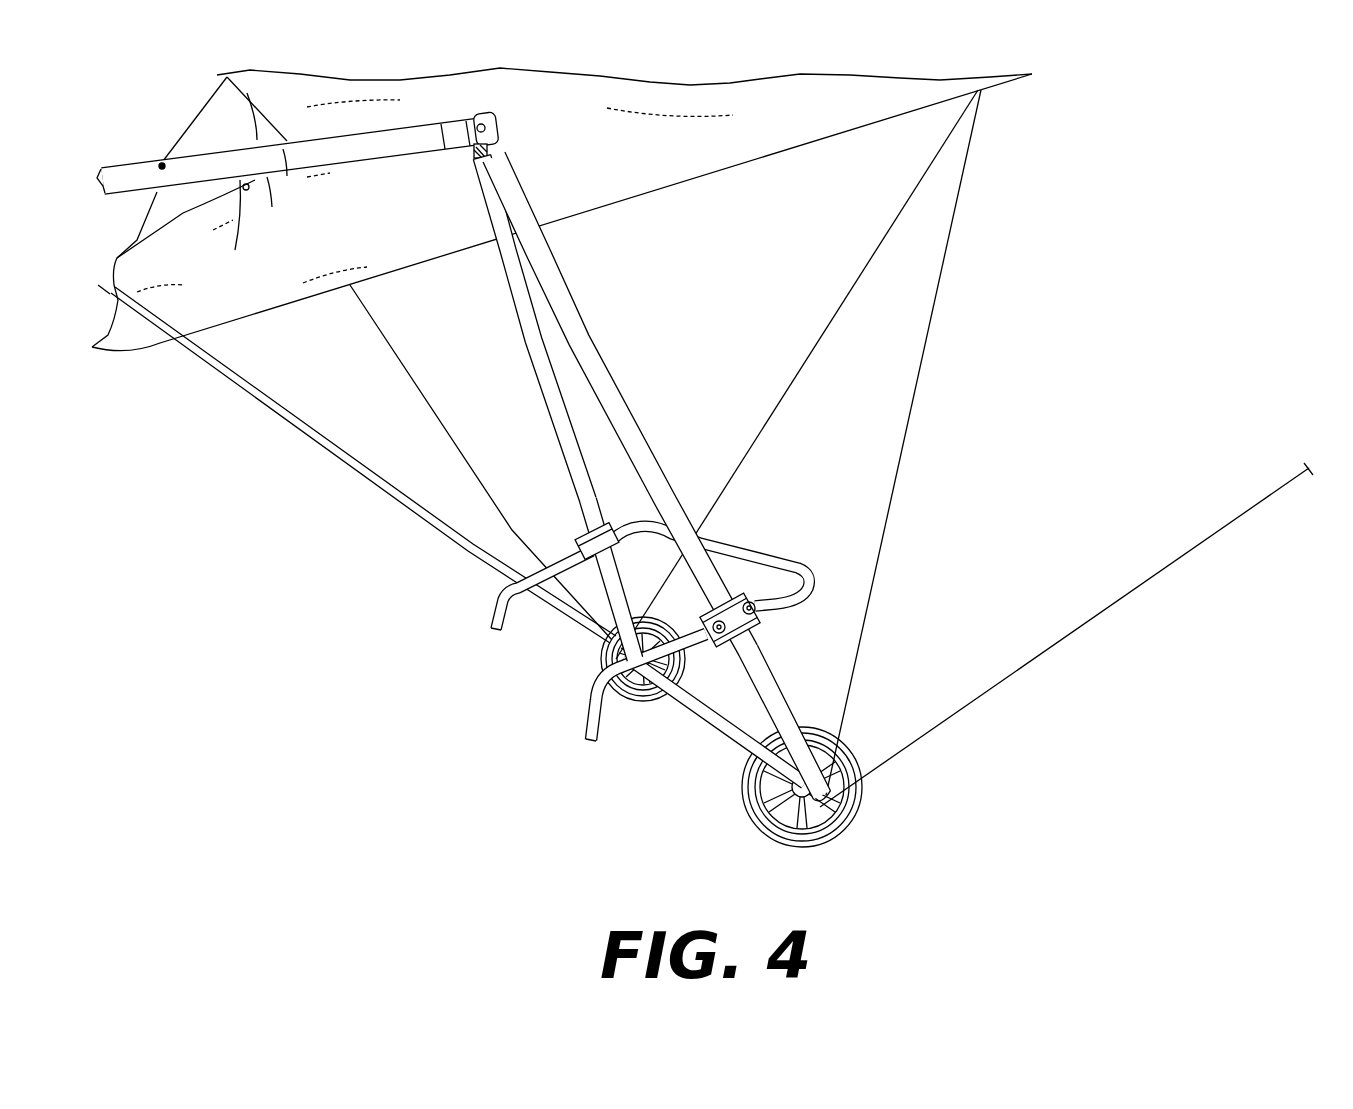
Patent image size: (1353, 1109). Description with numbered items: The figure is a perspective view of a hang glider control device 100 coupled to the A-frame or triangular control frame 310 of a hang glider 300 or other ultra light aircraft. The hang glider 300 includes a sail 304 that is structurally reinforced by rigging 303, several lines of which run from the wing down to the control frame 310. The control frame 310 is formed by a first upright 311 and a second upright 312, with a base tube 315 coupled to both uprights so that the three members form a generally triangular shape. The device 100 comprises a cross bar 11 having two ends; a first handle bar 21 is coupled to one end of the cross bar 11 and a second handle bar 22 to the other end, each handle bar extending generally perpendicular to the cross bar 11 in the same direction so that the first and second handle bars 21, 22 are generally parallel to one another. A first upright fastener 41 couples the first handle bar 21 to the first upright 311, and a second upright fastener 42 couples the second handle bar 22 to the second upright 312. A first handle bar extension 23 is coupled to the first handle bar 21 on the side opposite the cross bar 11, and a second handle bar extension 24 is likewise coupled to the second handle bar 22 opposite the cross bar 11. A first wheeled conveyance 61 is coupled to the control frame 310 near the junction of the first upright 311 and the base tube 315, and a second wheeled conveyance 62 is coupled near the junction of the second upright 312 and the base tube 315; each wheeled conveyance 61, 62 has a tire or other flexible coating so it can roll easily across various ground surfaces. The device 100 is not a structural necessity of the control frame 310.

The hang glider control device 100 is at (646, 660).
The cross bar 11 is at (740, 550).
The first handle bar 21 is at (715, 653).
The second handle bar 22 is at (568, 548).
The first handle bar extension 23 is at (588, 717).
The second handle bar extension 24 is at (500, 606).
The first upright fastener 41 is at (776, 670).
The second upright fastener 42 is at (579, 533).
The first wheeled conveyance 61 is at (768, 822).
The second wheeled conveyance 62 is at (604, 663).
The hang glider 300 is at (562, 207).
The rigging 303 is at (868, 257).
The sail 304 is at (552, 175).
The control frame 310 is at (607, 403).
The first upright 311 is at (590, 366).
The second upright 312 is at (538, 367).
The base tube 315 is at (683, 700).